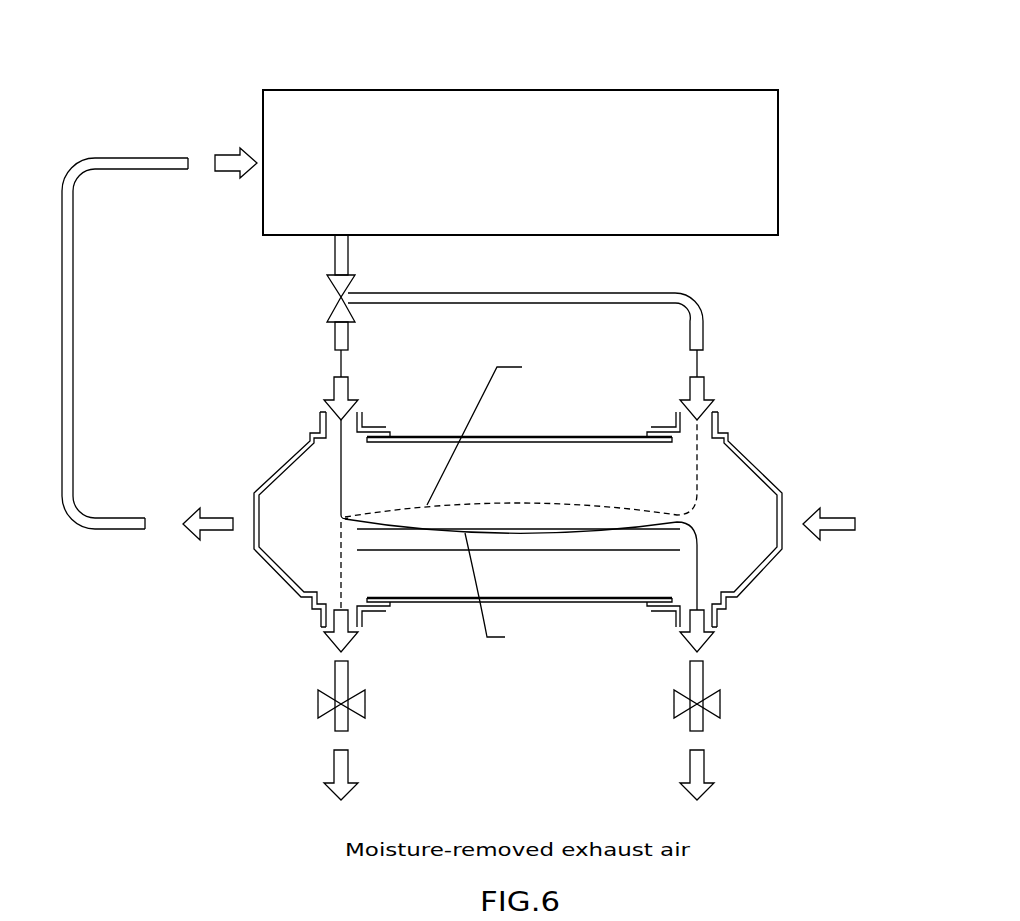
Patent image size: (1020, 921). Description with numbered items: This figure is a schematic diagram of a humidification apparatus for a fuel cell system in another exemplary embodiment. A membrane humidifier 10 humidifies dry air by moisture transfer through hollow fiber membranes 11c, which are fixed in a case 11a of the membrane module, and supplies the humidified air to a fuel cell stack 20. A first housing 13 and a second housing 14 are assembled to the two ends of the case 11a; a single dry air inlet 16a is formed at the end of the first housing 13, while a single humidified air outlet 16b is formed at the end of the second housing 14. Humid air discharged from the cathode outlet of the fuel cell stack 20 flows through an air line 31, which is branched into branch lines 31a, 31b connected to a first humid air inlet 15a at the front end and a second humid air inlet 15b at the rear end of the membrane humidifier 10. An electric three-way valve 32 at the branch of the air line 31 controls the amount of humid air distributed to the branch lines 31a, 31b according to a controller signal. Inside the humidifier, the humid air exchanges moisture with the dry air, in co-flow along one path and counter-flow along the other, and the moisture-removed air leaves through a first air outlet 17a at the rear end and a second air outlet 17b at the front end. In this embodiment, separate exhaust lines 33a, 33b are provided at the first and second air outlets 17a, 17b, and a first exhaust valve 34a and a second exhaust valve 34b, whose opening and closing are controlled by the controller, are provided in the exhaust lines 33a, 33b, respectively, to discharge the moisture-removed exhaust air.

The fuel cell stack 20 is at (523, 90).
The air line 31 is at (349, 250).
The electric 3-way valve 32 is at (333, 289).
The branch line 31a is at (349, 336).
The branch line 31b is at (537, 300).
The membrane humidifier 10 is at (278, 603).
The case 11a is at (461, 600).
The hollow fiber membranes 11c is at (423, 560).
The first housing 13 is at (752, 587).
The second housing 14 is at (278, 465).
The first humid air inlet 15a is at (318, 418).
The second humid air inlet 15b is at (719, 418).
The dry air inlet 16a is at (782, 503).
The humidified air outlet 16b is at (255, 508).
The first air outlet 17a is at (716, 623).
The second air outlet 17b is at (322, 627).
The exhaust line 33a is at (705, 722).
The exhaust line 33b is at (348, 722).
The first exhaust valve 34a is at (674, 712).
The second exhaust valve 34b is at (318, 712).